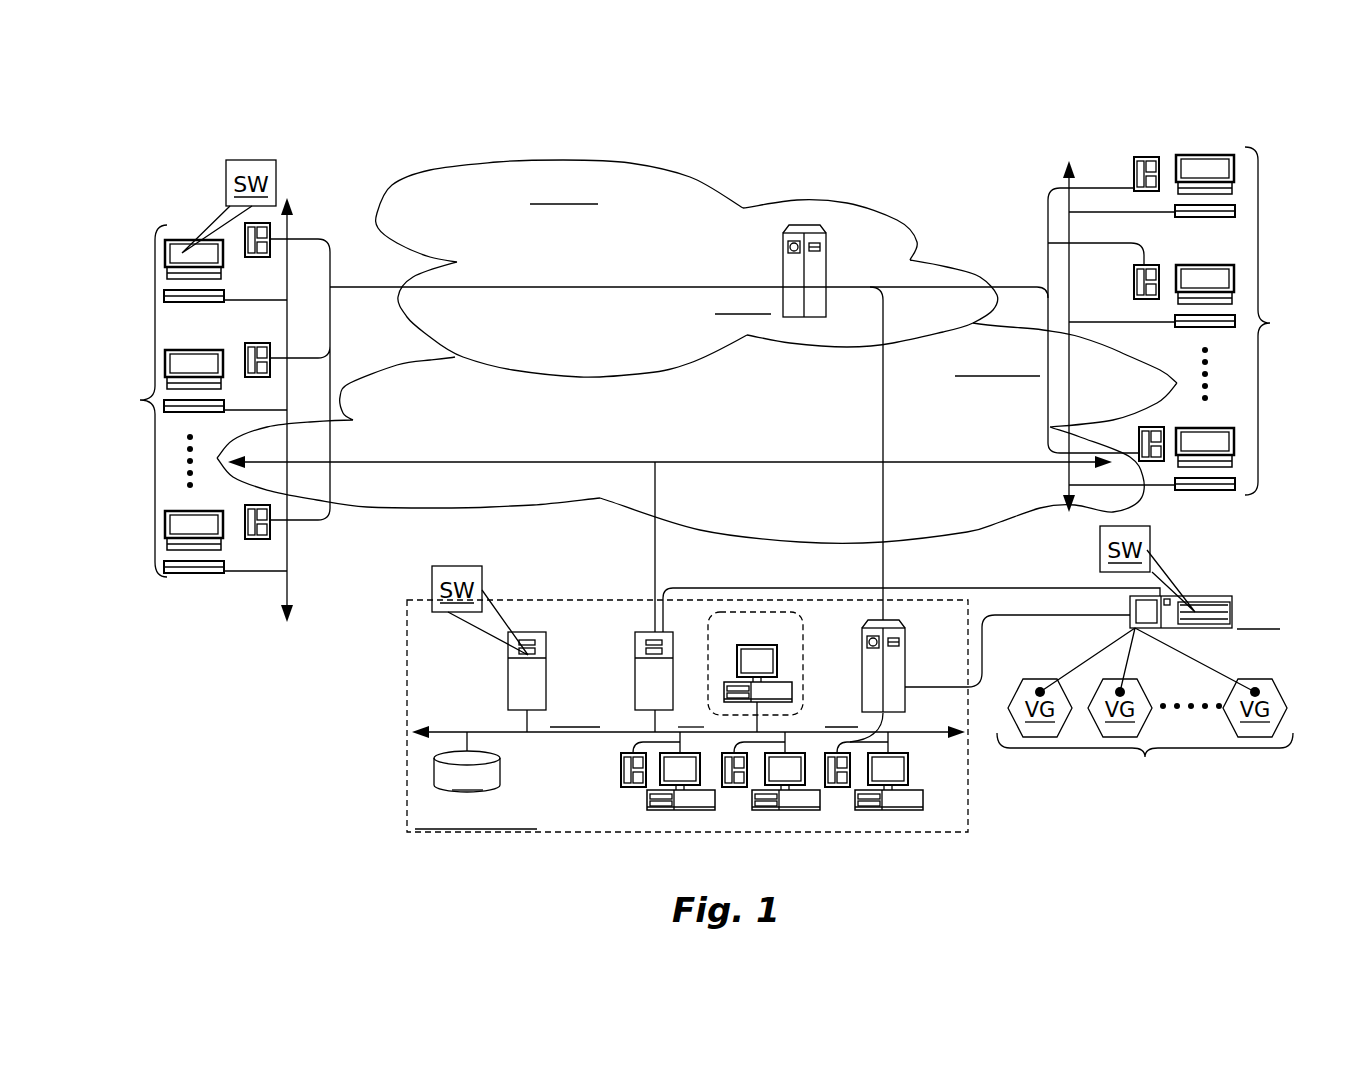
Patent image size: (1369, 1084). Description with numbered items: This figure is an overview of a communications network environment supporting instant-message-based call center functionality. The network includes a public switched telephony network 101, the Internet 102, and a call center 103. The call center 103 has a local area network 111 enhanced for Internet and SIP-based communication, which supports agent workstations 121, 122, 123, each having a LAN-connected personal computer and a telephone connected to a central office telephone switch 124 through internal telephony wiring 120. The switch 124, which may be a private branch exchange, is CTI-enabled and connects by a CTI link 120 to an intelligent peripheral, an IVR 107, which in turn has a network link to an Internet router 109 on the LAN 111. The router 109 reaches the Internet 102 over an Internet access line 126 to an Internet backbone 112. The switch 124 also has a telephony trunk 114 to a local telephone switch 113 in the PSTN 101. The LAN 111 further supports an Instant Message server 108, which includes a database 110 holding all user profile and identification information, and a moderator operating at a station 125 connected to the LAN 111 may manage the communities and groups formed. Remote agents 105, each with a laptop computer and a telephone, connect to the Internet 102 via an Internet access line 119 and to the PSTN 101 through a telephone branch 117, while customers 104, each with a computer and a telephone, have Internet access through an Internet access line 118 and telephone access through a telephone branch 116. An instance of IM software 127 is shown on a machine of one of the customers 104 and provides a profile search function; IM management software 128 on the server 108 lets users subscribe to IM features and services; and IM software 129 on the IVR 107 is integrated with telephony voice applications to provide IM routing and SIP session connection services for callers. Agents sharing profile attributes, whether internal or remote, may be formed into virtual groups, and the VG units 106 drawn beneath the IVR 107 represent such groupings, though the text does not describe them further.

The public switched telephony network 101 is at (492, 163).
The Internet 102 is at (490, 508).
The call center 103 is at (390, 762).
The customers 104 is at (140, 400).
The remote agents 105 is at (1270, 323).
The voice gateways (VG) 106(1-n) 106 is at (1145, 757).
The IVR 107 is at (1200, 596).
The Instant Message server 108 is at (508, 697).
The Internet router 109 is at (635, 680).
The database 110 is at (500, 762).
The local area network 111 is at (490, 730).
The Internet backbone 112 is at (835, 460).
The local telephone switch 113 is at (782, 280).
The telephony trunk 114 is at (886, 428).
The telephone branch 116 is at (577, 286).
The telephone branch 117 is at (1046, 263).
The Internet access line 118 is at (289, 588).
The Internet access line 119 is at (1012, 525).
The internal telephony wiring 120 is at (883, 727).
The agent workstation 121 is at (934, 779).
The agent workstation 122 is at (786, 820).
The agent workstation 123 is at (626, 800).
The central office telephone switch 124 is at (906, 661).
The moderator station 125 is at (812, 661).
The Internet access line 126 is at (652, 576).
The IM software 127 is at (278, 165).
The IM management software 128 is at (483, 580).
The IM software 129 is at (1098, 540).